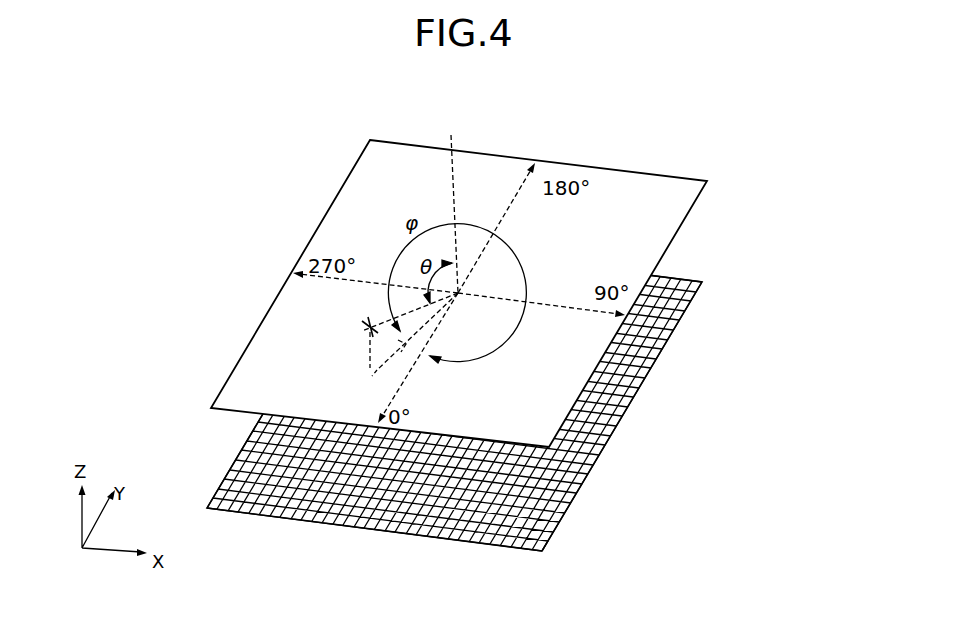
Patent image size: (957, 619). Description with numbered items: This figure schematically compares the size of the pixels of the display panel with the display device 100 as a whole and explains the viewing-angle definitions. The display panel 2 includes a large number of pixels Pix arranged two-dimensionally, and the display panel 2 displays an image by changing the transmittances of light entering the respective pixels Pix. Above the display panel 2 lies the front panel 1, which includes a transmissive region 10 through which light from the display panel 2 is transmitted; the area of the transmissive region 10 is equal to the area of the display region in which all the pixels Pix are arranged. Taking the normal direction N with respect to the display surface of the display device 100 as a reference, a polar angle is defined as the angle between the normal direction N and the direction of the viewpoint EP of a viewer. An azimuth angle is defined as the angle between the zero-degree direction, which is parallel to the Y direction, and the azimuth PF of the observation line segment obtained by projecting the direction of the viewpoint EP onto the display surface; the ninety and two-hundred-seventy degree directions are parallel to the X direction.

The front panel 1 is at (532, 135).
The transmissive region 10 is at (665, 186).
The display device 100 is at (751, 135).
The display panel 2 is at (665, 415).
The pixels Pix is at (548, 534).
The viewpoint EP is at (362, 326).
The azimuth of observation line segment PF is at (374, 376).
The normal direction N is at (457, 172).